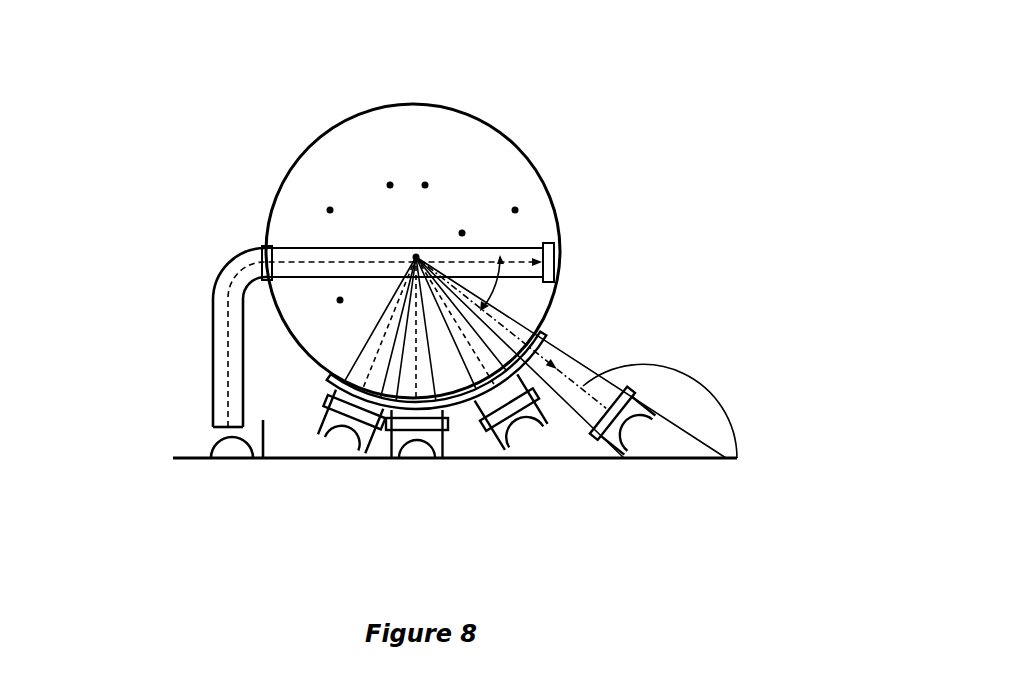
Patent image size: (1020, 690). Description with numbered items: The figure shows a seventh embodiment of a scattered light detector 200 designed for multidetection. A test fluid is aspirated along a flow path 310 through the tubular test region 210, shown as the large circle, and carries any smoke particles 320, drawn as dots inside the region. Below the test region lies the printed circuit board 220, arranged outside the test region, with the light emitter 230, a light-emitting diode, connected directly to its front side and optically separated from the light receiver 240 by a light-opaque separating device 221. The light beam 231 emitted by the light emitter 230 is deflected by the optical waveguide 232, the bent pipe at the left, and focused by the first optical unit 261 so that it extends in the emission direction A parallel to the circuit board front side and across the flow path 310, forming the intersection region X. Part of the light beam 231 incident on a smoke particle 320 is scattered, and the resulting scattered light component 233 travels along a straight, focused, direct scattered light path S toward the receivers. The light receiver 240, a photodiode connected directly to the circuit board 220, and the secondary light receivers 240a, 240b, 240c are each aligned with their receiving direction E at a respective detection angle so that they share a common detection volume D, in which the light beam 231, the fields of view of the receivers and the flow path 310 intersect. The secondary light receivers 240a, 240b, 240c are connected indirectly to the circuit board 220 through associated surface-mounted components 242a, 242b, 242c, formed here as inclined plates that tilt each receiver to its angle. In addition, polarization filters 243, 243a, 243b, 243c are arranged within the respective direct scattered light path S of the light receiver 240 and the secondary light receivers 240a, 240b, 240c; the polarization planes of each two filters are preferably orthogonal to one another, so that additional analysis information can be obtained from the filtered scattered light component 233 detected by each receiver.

The scattered light detector 200 is at (331, 84).
The test region 210 is at (383, 167).
The flow path 310 is at (498, 167).
The smoke particle 320 is at (416, 257).
The light beam 231 is at (348, 243).
The optical waveguide 232 is at (213, 340).
The first optical unit 261 is at (253, 243).
The light emitter 230 is at (208, 445).
The circuit board 220 is at (243, 462).
The light-opaque separating device 221 is at (259, 462).
The scattered light component 233 is at (550, 358).
The light receiver 240 is at (413, 462).
The secondary light receiver 240a is at (360, 462).
The secondary light receiver 240b is at (508, 462).
The secondary light receiver 240c is at (653, 462).
The surface-mounted component 242a is at (320, 462).
The surface-mounted component 242b is at (525, 462).
The surface-mounted component 242c is at (697, 462).
The polarization filter 243 is at (437, 462).
The polarization filter 243a is at (352, 462).
The polarization filter 243b is at (557, 462).
The polarization filter 243c is at (627, 462).
The intersection region X is at (318, 252).
The detection volume D is at (416, 257).
The emission direction A is at (517, 256).
The direct scattered light path S is at (548, 300).
The receiving direction E is at (572, 374).